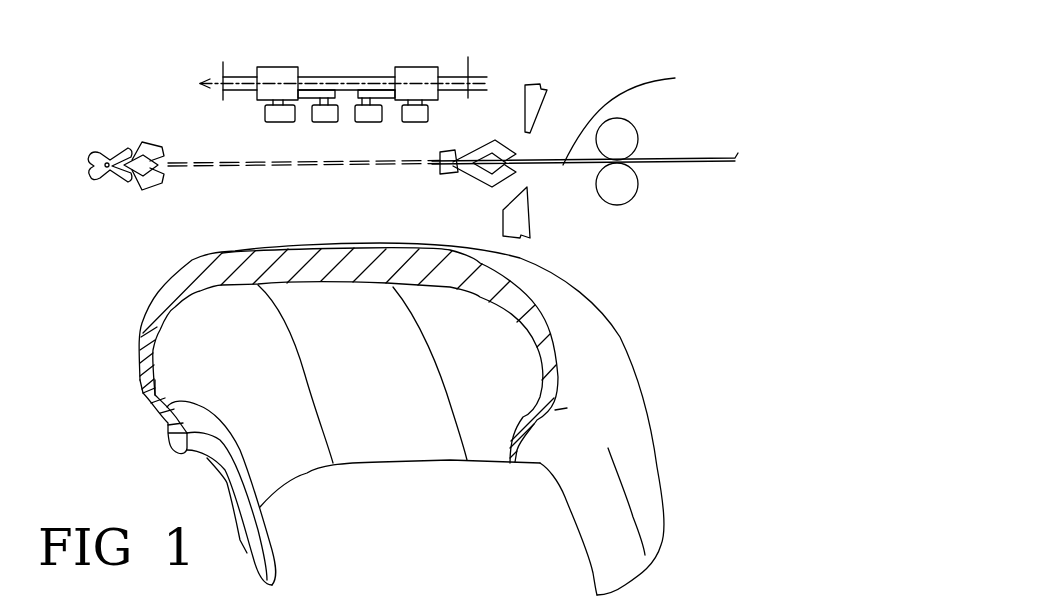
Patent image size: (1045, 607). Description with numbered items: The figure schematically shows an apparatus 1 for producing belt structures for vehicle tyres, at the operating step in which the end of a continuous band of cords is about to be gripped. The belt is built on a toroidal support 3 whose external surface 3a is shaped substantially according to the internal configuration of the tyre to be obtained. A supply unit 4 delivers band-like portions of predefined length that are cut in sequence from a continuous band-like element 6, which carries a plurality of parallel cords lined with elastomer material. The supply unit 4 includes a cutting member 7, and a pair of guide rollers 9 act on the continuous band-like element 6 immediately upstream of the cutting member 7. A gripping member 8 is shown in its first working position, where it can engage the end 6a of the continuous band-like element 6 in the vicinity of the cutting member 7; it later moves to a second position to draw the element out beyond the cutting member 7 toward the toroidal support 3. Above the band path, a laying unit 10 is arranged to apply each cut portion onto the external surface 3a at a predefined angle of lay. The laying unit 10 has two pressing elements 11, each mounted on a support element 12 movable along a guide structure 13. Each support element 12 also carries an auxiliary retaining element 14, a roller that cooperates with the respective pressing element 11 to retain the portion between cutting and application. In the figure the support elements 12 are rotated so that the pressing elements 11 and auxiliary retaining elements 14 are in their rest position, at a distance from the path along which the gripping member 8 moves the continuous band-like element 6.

The apparatus 1 is at (733, 87).
The toroidal support 3 is at (630, 433).
The external surface 3a is at (393, 248).
The supply unit 4 is at (562, 182).
The continuous band-like element 6 is at (728, 163).
The end of the continuous band-like element 6a is at (636, 113).
The cutting member 7 is at (537, 103).
The gripping member 8 is at (123, 153).
The pair of guide rollers 9 is at (628, 185).
The laying unit 10 is at (212, 75).
The pressing element 11 is at (325, 116).
The support element 12 is at (280, 72).
The guide structure 13 is at (241, 91).
The auxiliary retaining element 14 is at (277, 116).